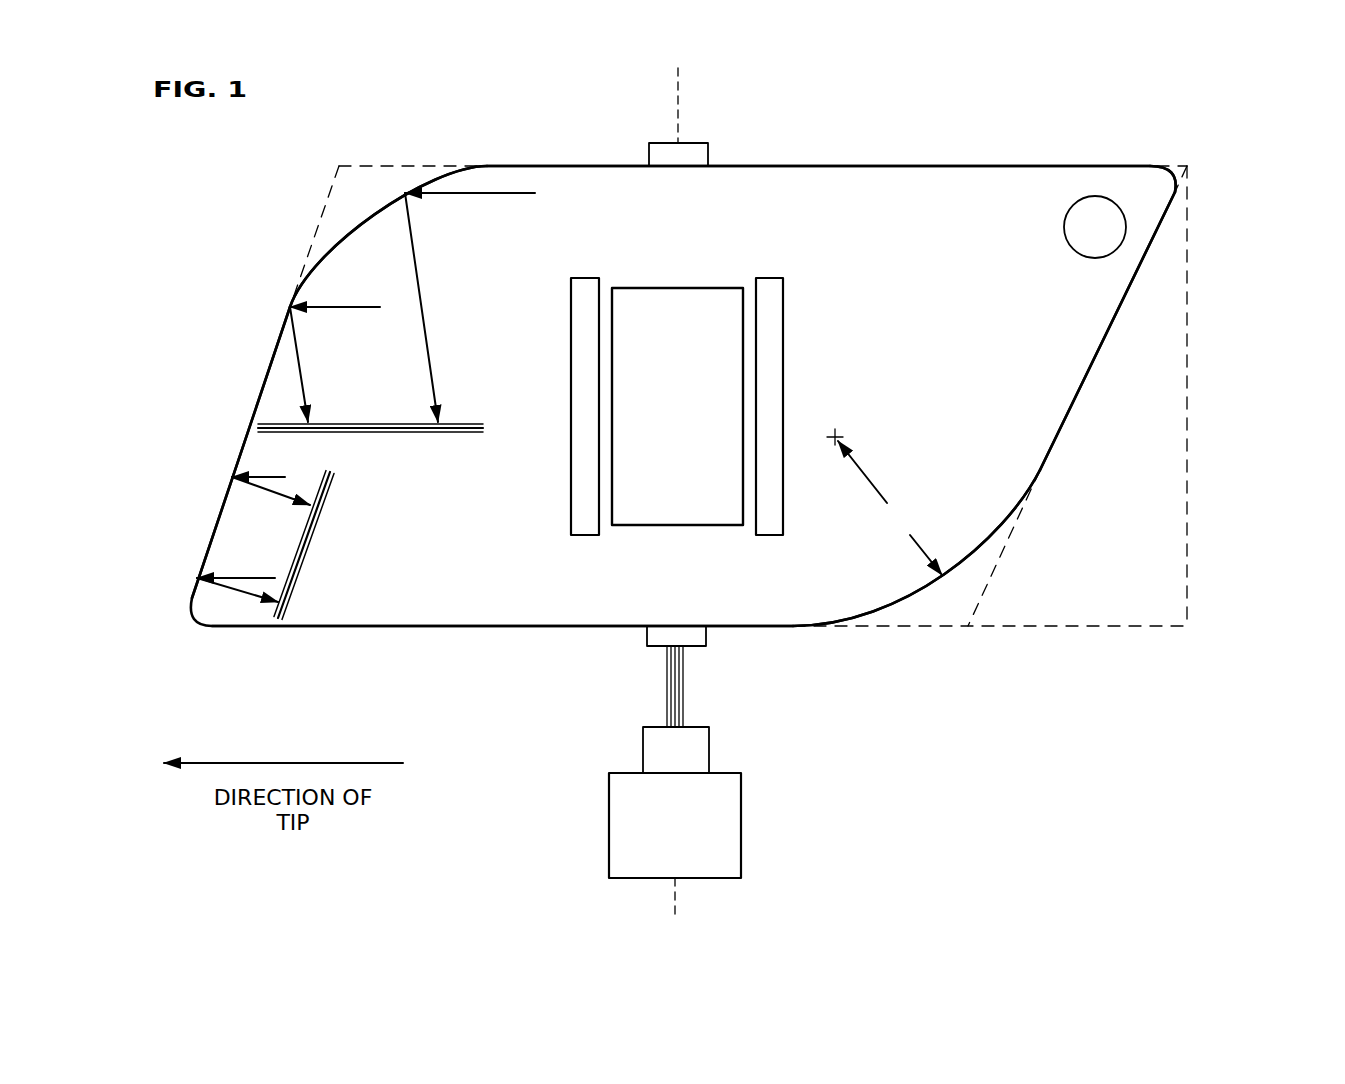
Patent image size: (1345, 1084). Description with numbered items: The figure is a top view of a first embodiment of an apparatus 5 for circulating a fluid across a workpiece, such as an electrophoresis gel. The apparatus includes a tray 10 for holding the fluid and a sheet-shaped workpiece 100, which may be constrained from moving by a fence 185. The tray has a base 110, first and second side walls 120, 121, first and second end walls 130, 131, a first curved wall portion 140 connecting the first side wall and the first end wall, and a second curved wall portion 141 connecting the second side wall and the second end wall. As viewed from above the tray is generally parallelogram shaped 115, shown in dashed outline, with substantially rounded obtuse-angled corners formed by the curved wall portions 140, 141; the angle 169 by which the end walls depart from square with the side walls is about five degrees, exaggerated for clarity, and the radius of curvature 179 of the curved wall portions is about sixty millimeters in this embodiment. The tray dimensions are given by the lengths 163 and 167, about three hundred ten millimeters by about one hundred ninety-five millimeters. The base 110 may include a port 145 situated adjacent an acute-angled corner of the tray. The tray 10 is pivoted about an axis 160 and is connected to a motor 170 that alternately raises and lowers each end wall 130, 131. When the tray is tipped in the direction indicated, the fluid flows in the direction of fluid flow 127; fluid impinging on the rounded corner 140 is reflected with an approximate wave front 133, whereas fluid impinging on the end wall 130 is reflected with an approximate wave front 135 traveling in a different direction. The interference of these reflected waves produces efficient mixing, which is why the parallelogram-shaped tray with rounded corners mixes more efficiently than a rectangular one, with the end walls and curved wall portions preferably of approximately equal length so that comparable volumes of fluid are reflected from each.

The apparatus 5 is at (1144, 778).
The tray 10 is at (965, 157).
The workpiece 100 is at (705, 288).
The base 110 is at (881, 414).
The parallelogram shape 115 is at (320, 222).
The first side wall 120 is at (882, 166).
The second side wall 121 is at (435, 623).
The direction of fluid flow 127 is at (307, 372).
The first end wall 130 is at (235, 455).
The second end wall 131 is at (1143, 270).
The wave front 133 is at (415, 433).
The wave front 135 is at (307, 555).
The first curved wall portion 140 is at (405, 190).
The second curved wall portion 141 is at (983, 545).
The port 145 is at (1070, 248).
The axis 160 is at (678, 68).
The length 163 is at (184, 711).
The length 167 is at (1312, 168).
The angle 169 is at (1174, 222).
The motor 170 is at (741, 803).
The radius of curvature 179 is at (884, 502).
The fence 185 is at (603, 535).